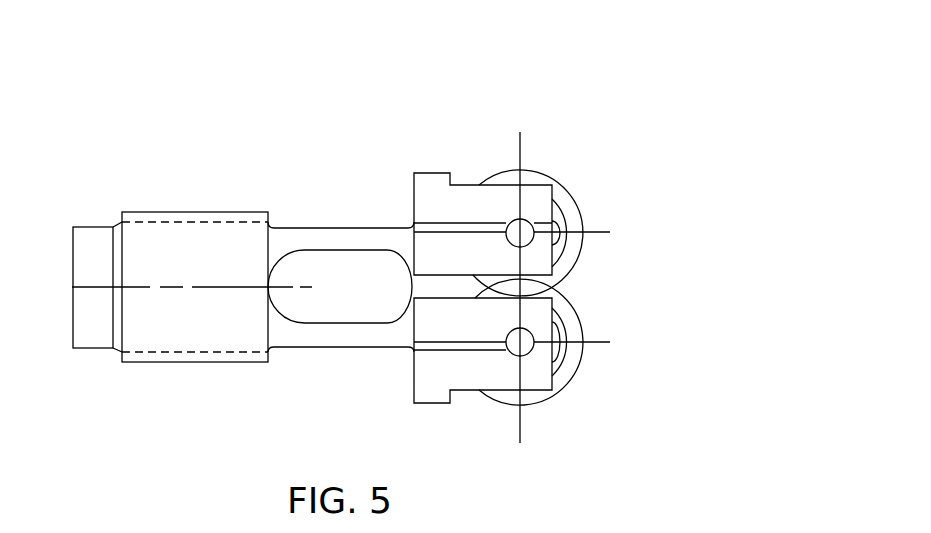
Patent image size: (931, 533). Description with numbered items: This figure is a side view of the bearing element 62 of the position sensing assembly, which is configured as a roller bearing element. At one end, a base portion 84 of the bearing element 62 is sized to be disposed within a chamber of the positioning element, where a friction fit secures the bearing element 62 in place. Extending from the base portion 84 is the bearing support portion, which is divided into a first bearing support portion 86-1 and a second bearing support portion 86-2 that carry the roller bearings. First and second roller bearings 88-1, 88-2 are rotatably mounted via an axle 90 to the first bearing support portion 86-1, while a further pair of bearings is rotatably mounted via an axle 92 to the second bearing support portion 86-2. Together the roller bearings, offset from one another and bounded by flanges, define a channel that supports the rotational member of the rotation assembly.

The bearing element 62 is at (537, 80).
The base portion 84 is at (222, 212).
The first bearing support portion 86-1 is at (414, 202).
The second bearing support portion 86-2 is at (414, 377).
The first roller bearing 88-1 is at (558, 182).
The second roller bearing 88-2 is at (563, 385).
The axle 90 is at (513, 221).
The axle 92 is at (515, 329).